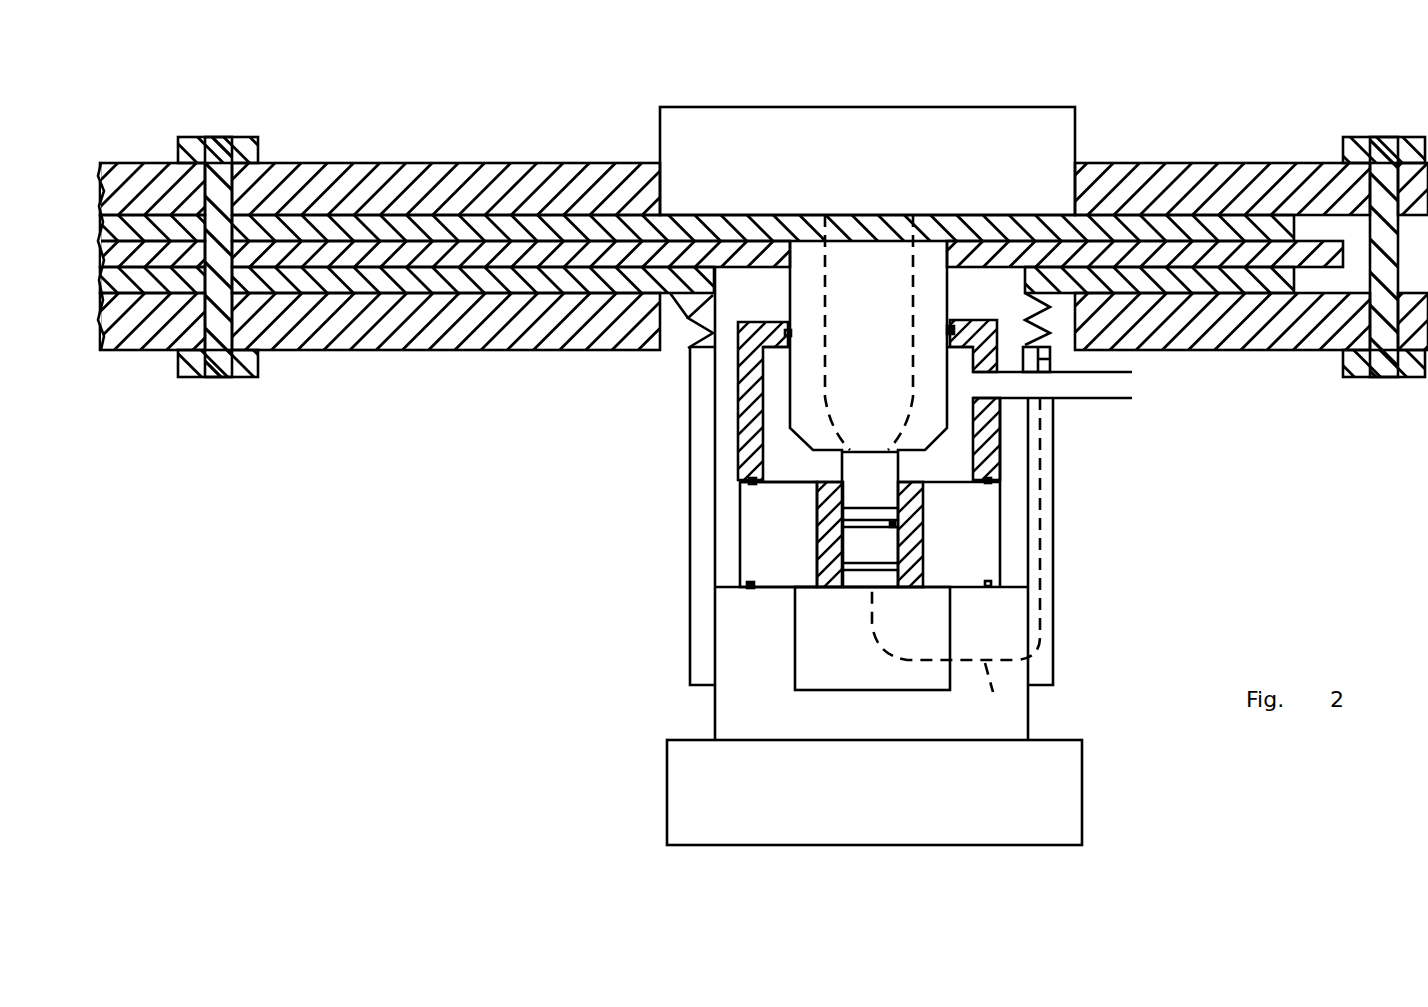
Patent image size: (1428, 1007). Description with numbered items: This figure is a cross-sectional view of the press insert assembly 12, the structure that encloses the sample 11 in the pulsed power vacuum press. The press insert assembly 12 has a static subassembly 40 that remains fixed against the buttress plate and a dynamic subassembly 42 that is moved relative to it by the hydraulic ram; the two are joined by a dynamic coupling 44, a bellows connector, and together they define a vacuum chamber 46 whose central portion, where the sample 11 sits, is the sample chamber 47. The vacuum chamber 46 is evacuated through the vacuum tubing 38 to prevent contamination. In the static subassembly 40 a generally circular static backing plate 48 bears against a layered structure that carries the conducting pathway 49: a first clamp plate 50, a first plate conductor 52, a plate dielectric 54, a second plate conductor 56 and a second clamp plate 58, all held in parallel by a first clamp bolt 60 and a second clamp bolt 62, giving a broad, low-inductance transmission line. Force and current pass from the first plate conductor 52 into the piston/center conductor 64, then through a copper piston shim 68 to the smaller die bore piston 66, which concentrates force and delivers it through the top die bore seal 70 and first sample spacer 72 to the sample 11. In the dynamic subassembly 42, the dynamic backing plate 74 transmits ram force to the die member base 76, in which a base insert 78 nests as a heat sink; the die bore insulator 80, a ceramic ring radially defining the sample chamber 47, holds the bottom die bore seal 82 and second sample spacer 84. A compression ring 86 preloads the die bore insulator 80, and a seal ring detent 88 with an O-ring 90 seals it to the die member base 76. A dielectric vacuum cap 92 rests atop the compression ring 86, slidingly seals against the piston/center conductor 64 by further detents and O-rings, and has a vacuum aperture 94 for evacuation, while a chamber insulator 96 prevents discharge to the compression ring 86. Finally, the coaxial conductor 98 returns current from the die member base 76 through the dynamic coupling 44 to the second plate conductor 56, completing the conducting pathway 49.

The sample 11 is at (860, 562).
The press insert assembly 12 is at (482, 535).
The vacuum tubing 38 is at (1106, 393).
The static subassembly 40 is at (506, 109).
The dynamic subassembly 42 is at (1236, 535).
The dynamic coupling 44 is at (688, 322).
The vacuum chamber 46 is at (780, 398).
The sample chamber 47 is at (893, 548).
The static backing plate 48 is at (888, 171).
The conducting pathway 49 is at (122, 232).
The first clamp plate 50 is at (585, 175).
The first plate conductor 52 is at (423, 227).
The plate dielectric 54 is at (345, 248).
The second plate conductor 56 is at (377, 288).
The second clamp plate 58 is at (522, 335).
The first clamp bolt 60 is at (262, 145).
The second clamp bolt 62 is at (1393, 140).
The piston/center conductor 64 is at (860, 327).
The die bore piston 66 is at (885, 470).
The piston shim 68 is at (922, 425).
The top die bore seal 70 is at (893, 512).
The first sample spacer 72 is at (893, 525).
The dynamic backing plate 74 is at (865, 812).
The die member base 76 is at (860, 727).
The base insert 78 is at (845, 677).
The die bore insulator 80 is at (835, 553).
The bottom die bore seal 82 is at (858, 582).
The second sample spacer 84 is at (882, 572).
The compression ring 86 is at (765, 537).
The seal ring detent 88 is at (752, 480).
The O-ring 90 is at (955, 323).
The vacuum cap 92 is at (755, 323).
The vacuum aperture 94 is at (1002, 370).
The chamber insulator 96 is at (803, 478).
The coaxial conductor 98 is at (700, 622).